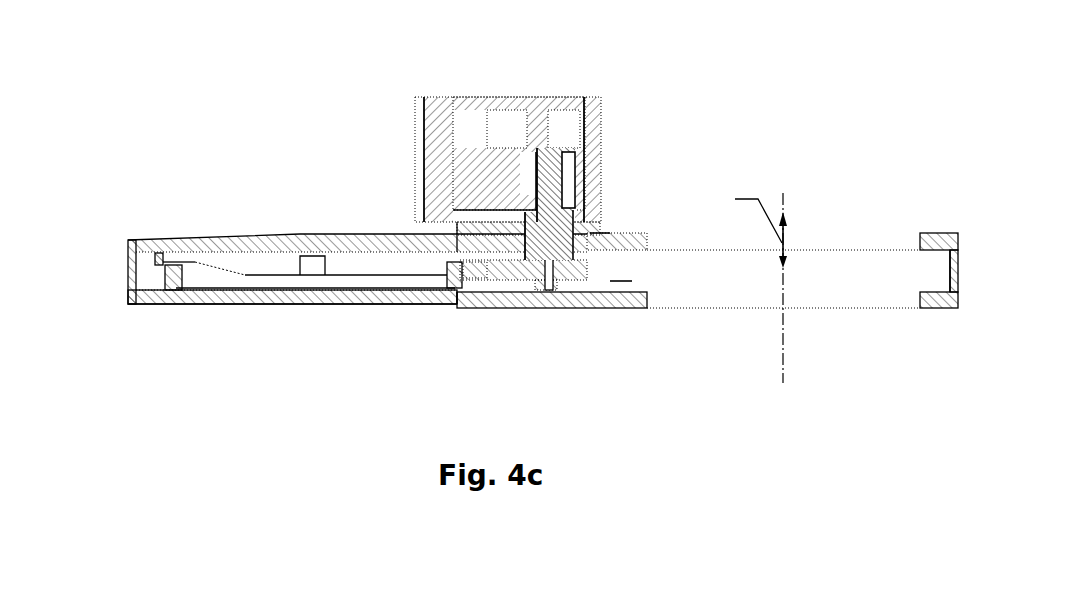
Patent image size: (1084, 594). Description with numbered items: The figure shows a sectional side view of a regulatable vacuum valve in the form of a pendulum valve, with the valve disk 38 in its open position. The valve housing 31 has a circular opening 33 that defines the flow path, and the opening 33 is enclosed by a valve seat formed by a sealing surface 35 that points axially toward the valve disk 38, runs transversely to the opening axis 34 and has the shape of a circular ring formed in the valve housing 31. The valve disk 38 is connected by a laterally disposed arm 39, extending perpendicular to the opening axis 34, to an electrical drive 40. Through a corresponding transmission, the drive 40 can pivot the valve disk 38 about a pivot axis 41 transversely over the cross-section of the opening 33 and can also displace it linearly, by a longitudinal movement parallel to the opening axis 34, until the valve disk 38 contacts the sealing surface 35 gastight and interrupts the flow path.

The valve housing 31 is at (323, 226).
The opening 33 is at (830, 312).
The opening axis 34 is at (782, 358).
The sealing surface 35 is at (640, 292).
The valve disk 38 is at (156, 274).
The arm 39 is at (499, 270).
The electrical drive 40 is at (548, 78).
The pivot axis 41 is at (550, 180).